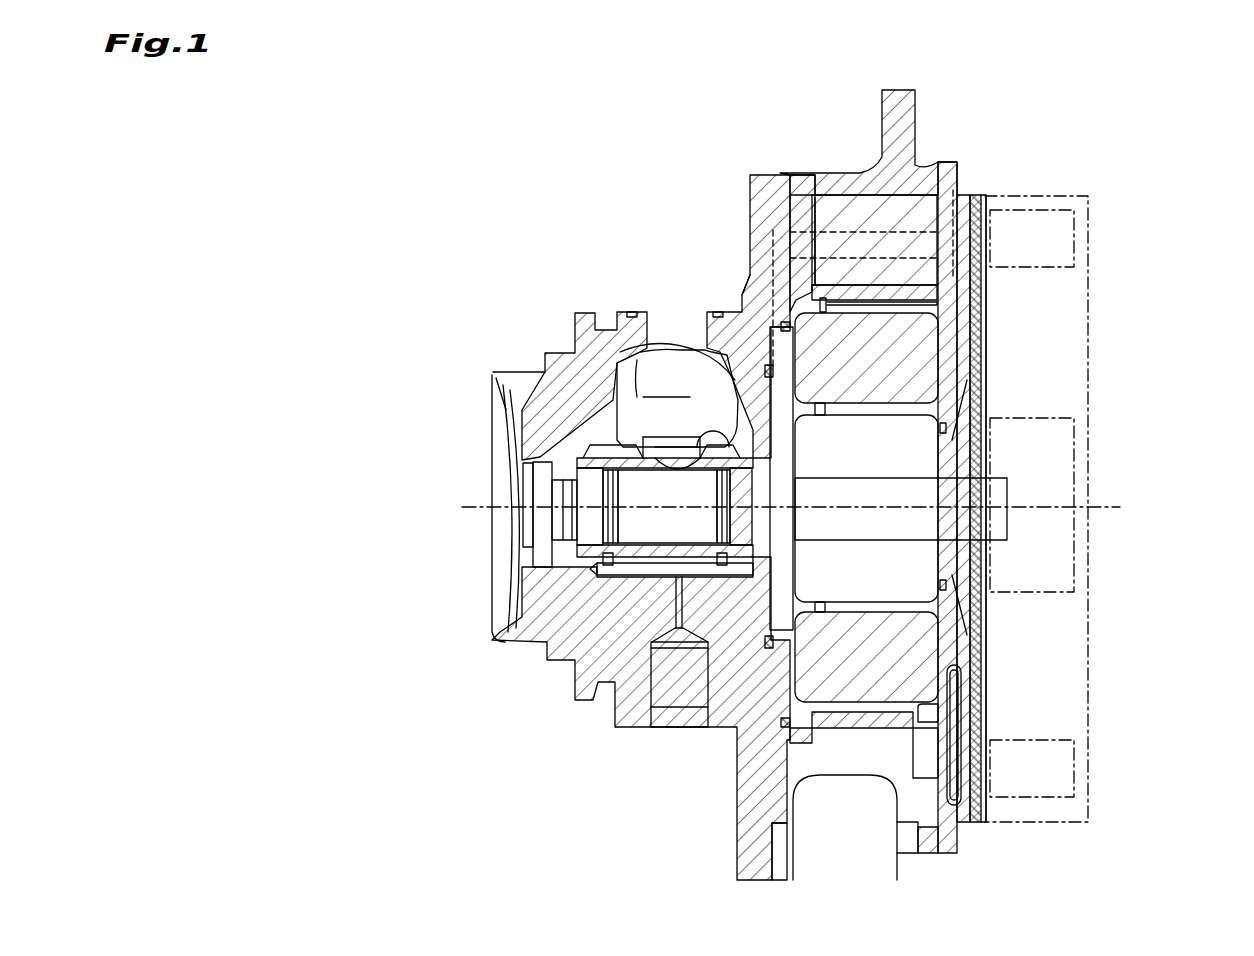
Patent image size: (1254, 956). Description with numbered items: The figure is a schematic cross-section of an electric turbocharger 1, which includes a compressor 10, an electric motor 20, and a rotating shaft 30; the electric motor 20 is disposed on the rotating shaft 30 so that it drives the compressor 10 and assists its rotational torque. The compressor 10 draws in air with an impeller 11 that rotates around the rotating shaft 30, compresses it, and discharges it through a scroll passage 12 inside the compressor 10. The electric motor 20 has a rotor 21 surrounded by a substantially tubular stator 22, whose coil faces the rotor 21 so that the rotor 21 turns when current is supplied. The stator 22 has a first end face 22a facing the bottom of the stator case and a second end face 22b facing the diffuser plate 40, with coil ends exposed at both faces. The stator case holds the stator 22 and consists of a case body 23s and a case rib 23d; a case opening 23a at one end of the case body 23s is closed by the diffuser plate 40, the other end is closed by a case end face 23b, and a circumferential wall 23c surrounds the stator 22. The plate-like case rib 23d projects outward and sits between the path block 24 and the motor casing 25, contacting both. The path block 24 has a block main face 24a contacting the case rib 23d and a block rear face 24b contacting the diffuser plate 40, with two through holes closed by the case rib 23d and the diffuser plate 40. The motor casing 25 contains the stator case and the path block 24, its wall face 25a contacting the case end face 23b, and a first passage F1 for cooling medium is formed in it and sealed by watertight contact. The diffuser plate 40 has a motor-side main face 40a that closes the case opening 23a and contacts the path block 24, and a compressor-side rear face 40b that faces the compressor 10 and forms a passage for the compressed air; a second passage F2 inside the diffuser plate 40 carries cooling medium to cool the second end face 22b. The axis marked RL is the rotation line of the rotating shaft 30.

The electric turbocharger 1 is at (1183, 159).
The compressor 10 is at (1088, 370).
The impeller 11 is at (1075, 576).
The scroll passage 12 is at (1075, 219).
The electric motor 20 is at (596, 236).
The rotor 21 is at (970, 408).
The stator 22 is at (706, 324).
The first end face 22a is at (615, 352).
The second end face 22b is at (987, 345).
The case opening 23a is at (960, 722).
The case end face 23b is at (718, 682).
The circumferential wall 23c is at (870, 727).
The case rib 23d is at (783, 206).
The case body 23s is at (863, 276).
The path block 24 is at (915, 190).
The block main face 24a is at (795, 235).
The block rear face 24b is at (952, 200).
The motor casing 25 is at (747, 232).
The wall face 25a is at (813, 725).
The rotating shaft 30 is at (1010, 472).
The diffuser plate 40 is at (976, 198).
The motor-side main face 40a is at (935, 798).
The compressor-side rear face 40b is at (985, 793).
The first passage F1 is at (746, 278).
The second passage F2 is at (992, 262).
The rotation axis RL is at (470, 512).